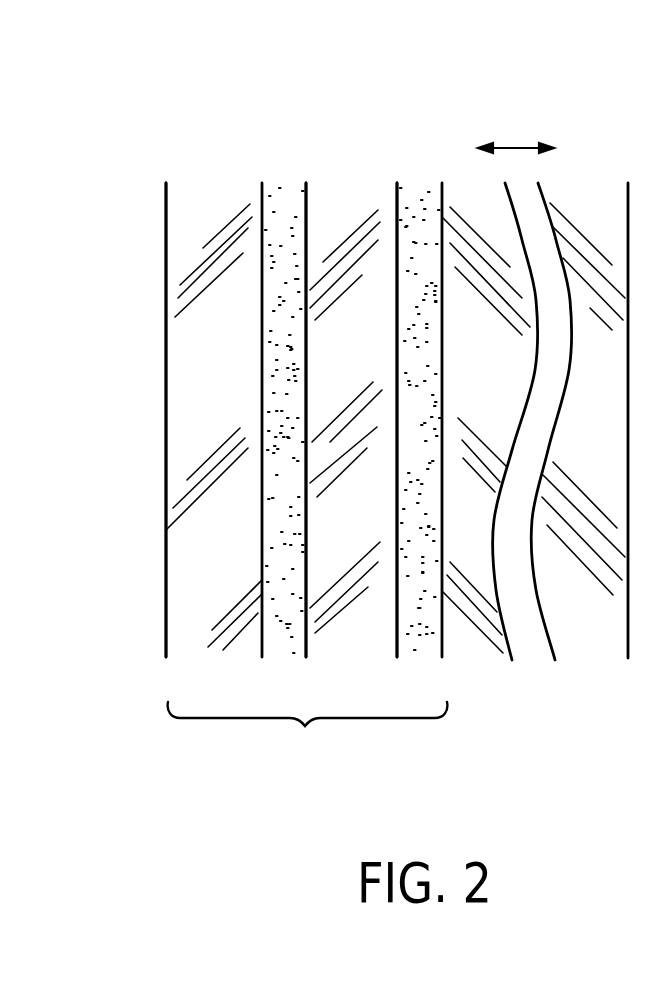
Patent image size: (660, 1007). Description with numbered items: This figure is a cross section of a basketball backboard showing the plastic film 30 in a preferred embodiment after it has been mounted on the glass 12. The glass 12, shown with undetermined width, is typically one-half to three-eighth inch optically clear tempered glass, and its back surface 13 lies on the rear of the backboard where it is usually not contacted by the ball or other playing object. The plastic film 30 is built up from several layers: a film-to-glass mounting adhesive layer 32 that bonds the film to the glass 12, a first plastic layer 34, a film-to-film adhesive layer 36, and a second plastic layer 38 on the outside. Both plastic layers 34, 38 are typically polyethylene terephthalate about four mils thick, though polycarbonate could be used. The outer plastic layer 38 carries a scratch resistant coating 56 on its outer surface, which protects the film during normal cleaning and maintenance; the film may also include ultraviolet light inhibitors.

The glass 12 is at (585, 628).
The back surface 13 is at (445, 642).
The plastic film 30 is at (305, 724).
The film-to-glass mounting adhesive layer 32 is at (418, 207).
The first plastic layer 34 is at (347, 208).
The film-to-film adhesive layer 36 is at (283, 193).
The second plastic layer 38 is at (195, 200).
The scratch resistant coating 56 is at (166, 603).